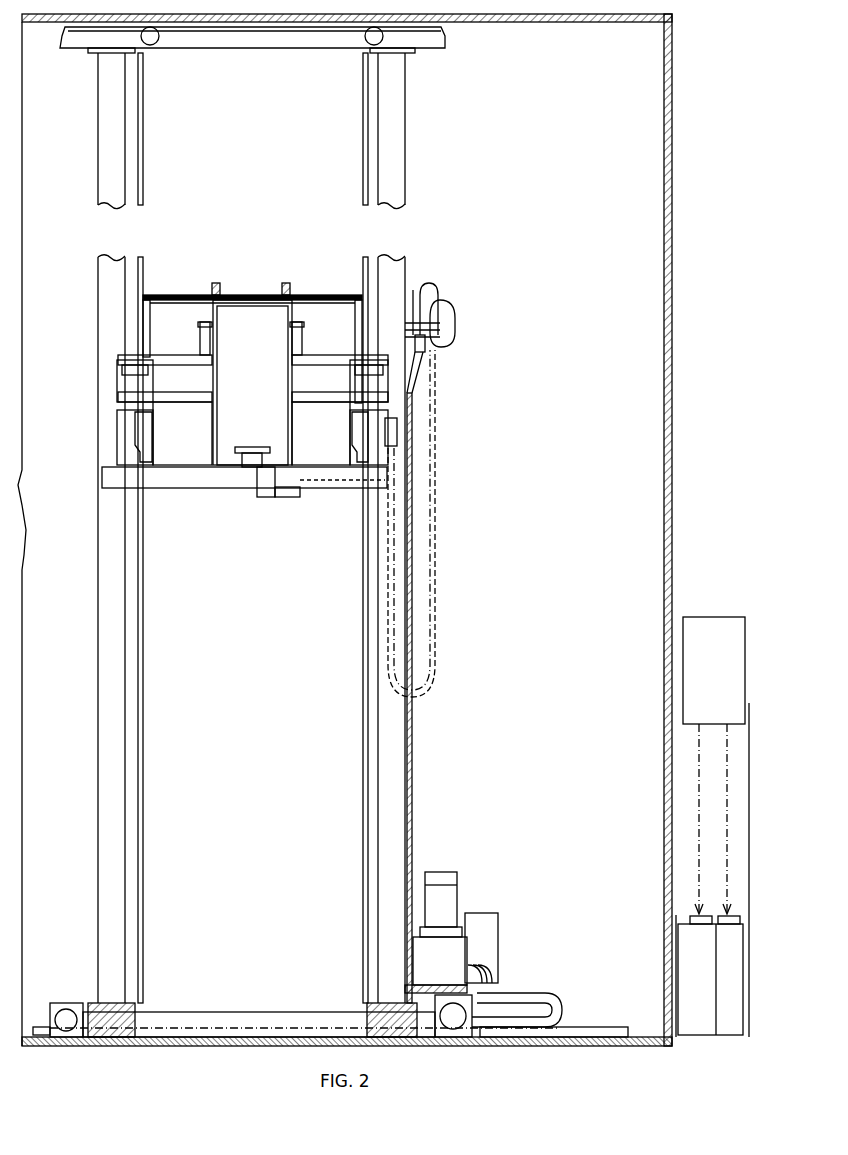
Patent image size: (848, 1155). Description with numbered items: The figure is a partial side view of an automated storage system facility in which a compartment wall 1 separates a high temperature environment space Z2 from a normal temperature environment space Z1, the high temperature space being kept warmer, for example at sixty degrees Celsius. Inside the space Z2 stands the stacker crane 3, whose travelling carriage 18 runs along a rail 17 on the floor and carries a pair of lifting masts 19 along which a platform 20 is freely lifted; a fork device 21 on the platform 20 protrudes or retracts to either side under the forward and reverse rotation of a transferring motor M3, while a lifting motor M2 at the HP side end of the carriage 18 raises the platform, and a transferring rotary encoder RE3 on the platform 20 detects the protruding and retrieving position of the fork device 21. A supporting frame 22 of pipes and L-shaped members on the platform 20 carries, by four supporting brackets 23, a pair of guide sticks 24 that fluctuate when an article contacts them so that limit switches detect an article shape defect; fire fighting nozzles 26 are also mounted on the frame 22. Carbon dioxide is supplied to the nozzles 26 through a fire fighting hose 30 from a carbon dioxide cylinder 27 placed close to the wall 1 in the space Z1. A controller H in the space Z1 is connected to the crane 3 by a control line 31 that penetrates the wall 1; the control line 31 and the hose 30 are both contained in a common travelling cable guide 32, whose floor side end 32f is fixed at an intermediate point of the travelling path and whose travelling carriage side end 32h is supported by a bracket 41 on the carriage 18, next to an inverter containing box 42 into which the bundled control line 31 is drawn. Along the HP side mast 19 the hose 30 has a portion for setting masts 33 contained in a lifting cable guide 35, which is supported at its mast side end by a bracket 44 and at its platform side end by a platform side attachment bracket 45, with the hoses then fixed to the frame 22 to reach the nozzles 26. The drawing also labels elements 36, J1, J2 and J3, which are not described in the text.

The compartment wall 1 is at (661, 642).
The stacker crane 3 is at (438, 128).
The rail 17 is at (586, 1030).
The travelling carriage 18 is at (270, 1035).
The lifting mast 19 is at (100, 800).
The platform 20 is at (190, 484).
The fork device 21 is at (250, 475).
The supporting frame 22 is at (185, 300).
The supporting bracket 23 is at (172, 368).
The guide stick 24 is at (304, 345).
The fire fighting nozzle 26 is at (216, 283).
The carbon dioxide cylinder 27 is at (724, 1037).
The fire fighting hose 30 is at (680, 918).
The control line 31 is at (437, 960).
The travelling cable guide 32 is at (540, 1015).
The floor side end of the cable guide 32f is at (212, 1035).
The travelling carriage side end of the cable guide 32h is at (508, 993).
The portion for setting masts 33 is at (425, 768).
The lifting cable guide 35 is at (436, 492).
The hose 36 is at (332, 295).
The bracket for attaching a cable guide 41 is at (497, 975).
The inverter containing box 42 is at (482, 913).
The bracket for attaching the lifting cable guide 44 is at (425, 285).
The platform side attachment bracket 45 is at (395, 445).
The controller H is at (713, 616).
The joint J1 is at (140, 1035).
The joint J2 is at (437, 1010).
The joint J3 is at (440, 345).
The lifting motor M2 is at (440, 872).
The transferring motor M3 is at (290, 498).
The transferring rotary encoder RE3 is at (268, 498).
The normal temperature environment space Z1 is at (726, 194).
The high temperature environment space Z2 is at (590, 194).